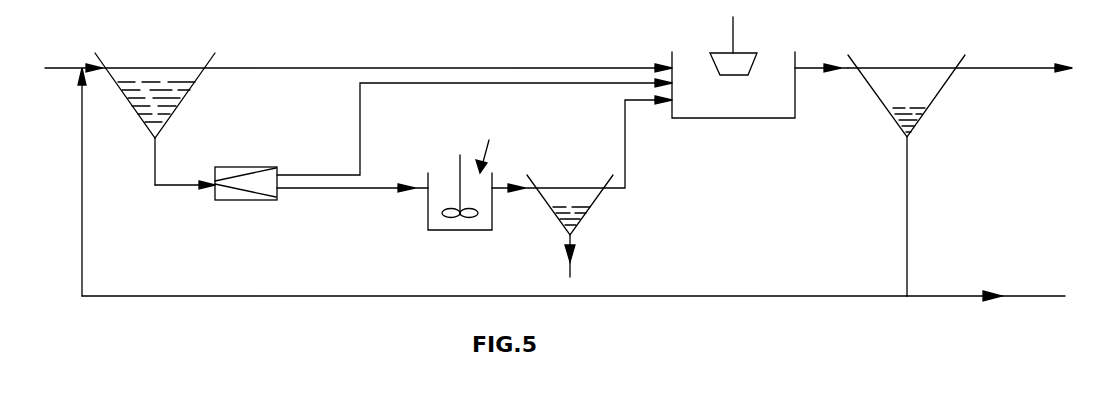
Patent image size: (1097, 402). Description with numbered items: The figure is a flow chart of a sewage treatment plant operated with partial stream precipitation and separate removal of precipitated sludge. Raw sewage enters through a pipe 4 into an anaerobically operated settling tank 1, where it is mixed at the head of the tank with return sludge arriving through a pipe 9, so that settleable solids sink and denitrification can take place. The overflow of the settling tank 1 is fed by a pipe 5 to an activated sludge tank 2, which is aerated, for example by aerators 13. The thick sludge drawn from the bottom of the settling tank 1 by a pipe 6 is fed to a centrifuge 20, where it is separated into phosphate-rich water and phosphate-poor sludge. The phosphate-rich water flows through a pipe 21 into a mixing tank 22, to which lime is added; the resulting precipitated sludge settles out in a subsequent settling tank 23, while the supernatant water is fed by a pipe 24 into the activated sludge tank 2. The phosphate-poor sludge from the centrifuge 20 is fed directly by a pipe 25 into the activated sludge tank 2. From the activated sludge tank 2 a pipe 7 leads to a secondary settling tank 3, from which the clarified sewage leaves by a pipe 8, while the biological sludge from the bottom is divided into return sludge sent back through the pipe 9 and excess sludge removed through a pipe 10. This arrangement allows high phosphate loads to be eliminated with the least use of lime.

The settling tank 1 is at (163, 78).
The activated sludge tank 2 is at (763, 85).
The secondary settling tank 3 is at (910, 85).
The pipe 4 is at (73, 171).
The pipe 5 is at (387, 58).
The pipe 6 is at (185, 175).
The pipe 7 is at (821, 57).
The pipe 8 is at (960, 56).
The pipe 9 is at (494, 283).
The pipe 10 is at (986, 286).
The aerators 13 is at (720, 58).
The centrifuge 20 is at (258, 188).
The pipe 21 is at (352, 199).
The mixing tank 22 is at (433, 202).
The settling tank 23 is at (582, 198).
The pipe 24 is at (582, 144).
The pipe 25 is at (474, 127).